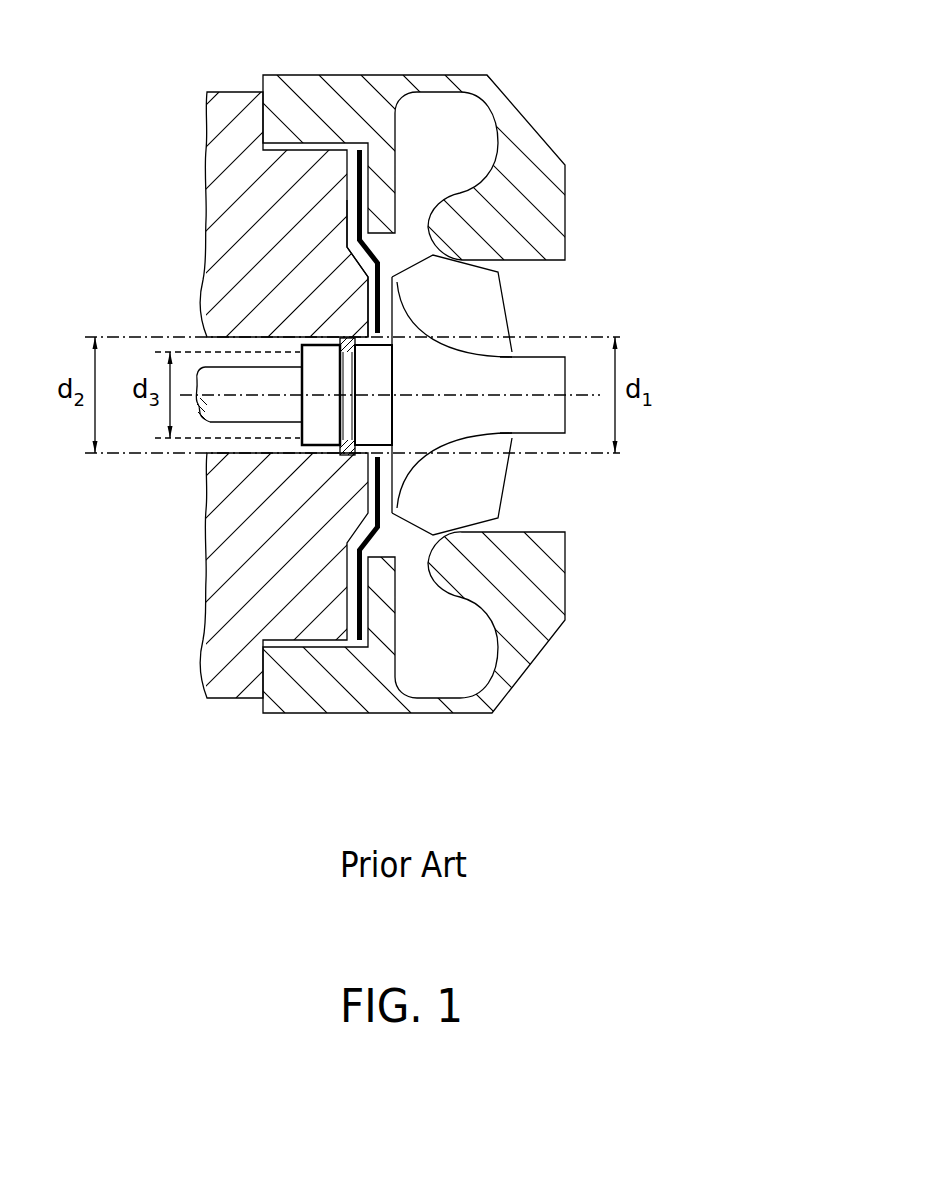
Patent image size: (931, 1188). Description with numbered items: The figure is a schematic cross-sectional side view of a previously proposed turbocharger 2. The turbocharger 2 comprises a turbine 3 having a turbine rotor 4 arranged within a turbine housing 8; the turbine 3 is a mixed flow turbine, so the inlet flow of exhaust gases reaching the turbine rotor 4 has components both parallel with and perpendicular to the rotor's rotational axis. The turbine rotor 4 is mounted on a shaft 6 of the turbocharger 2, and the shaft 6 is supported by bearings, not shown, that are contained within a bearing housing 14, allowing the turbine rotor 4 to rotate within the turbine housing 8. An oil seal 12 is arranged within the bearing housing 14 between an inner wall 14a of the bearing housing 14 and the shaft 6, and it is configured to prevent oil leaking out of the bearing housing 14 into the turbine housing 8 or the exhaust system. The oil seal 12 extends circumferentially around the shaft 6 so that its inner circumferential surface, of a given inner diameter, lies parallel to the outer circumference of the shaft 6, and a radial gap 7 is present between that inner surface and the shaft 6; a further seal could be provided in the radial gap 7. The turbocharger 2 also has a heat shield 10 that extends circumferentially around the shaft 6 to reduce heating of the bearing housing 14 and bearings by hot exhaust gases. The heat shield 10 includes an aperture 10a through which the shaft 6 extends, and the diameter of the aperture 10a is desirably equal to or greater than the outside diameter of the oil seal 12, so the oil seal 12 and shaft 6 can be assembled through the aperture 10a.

The turbocharger 2 is at (690, 97).
The turbine 3 is at (620, 604).
The turbine rotor 4 is at (485, 320).
The shaft 6 is at (227, 367).
The radial gap 7 is at (300, 445).
The turbine housing 8 is at (538, 197).
The heat shield 10 is at (352, 197).
The aperture 10a is at (385, 450).
The oil seal 12 is at (347, 460).
The bearing housing 14 is at (237, 153).
The inner wall 14a is at (283, 330).